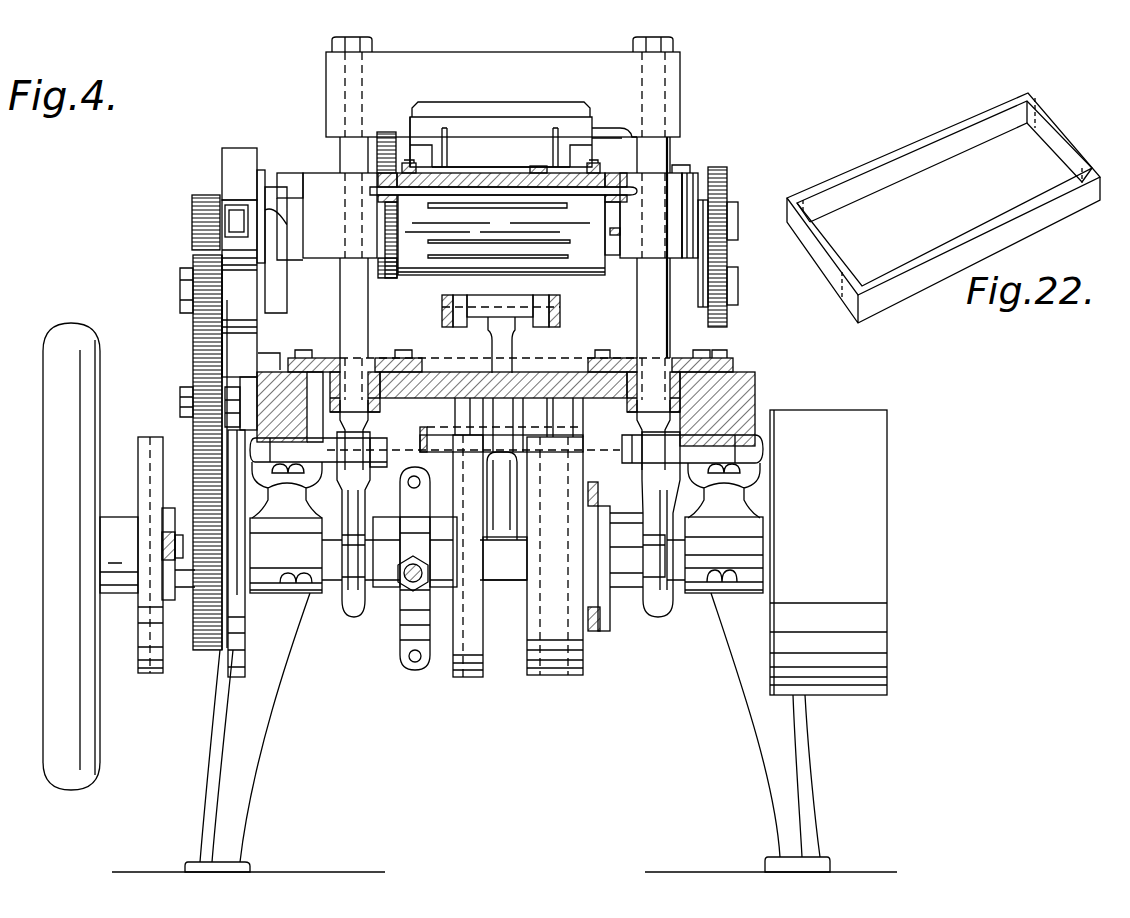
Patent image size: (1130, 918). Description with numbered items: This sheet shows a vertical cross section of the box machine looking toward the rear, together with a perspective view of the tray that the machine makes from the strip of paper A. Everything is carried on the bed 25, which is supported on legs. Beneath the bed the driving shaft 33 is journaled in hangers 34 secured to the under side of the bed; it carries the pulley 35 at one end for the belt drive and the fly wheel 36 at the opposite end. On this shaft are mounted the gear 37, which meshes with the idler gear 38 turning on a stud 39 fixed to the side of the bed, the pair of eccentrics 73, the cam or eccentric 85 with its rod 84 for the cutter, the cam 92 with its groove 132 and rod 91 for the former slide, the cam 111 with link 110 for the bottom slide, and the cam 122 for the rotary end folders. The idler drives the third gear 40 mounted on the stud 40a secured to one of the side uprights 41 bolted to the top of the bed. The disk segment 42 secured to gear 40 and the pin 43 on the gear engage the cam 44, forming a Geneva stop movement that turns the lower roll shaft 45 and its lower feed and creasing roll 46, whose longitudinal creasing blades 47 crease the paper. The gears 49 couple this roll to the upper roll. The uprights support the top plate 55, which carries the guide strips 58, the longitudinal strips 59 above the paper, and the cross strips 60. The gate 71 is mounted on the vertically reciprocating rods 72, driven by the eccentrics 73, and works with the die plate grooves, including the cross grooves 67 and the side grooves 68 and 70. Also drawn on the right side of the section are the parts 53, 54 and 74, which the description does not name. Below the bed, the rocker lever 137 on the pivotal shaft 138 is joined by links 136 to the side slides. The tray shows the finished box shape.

In FIG. 4, the gate 71 is at (395, 52).
In FIG. 4, the vertically reciprocating rods 72 is at (342, 152).
In FIG. 4, the cross grooves 67 is at (457, 155).
In FIG. 4, the cross strips 60 is at (485, 160).
In FIG. 4, the longitudinal strips 59 is at (533, 157).
In FIG. 4, the side grooves 68 is at (577, 150).
In FIG. 4, the guide strips 58 is at (613, 120).
In FIG. 4, the gears 49 is at (386, 134).
In FIG. 4, the die plate 74 is at (372, 198).
In FIG. 4, the lower roll shaft 45 is at (502, 245).
In FIG. 4, the side groove 70 is at (440, 198).
In FIG. 4, the longitudinal creasing blades 47 is at (505, 245).
In FIG. 4, the lower feed and creasing roll 46 is at (397, 278).
In FIG. 4, the cam 44 is at (228, 148).
In FIG. 4, the pin 43 is at (233, 220).
In FIG. 4, the third gear 40 is at (205, 235).
In FIG. 4, the stud 40a is at (268, 300).
In FIG. 4, the disk segment 42 is at (192, 268).
In FIG. 4, the side uprights 41 is at (225, 342).
In FIG. 4, the idler gear 38 is at (196, 358).
In FIG. 4, the stud 39 is at (233, 387).
In FIG. 4, the gear 54 is at (722, 172).
In FIG. 4, the gear hub 53 is at (722, 292).
In FIG. 4, the top plate 55 is at (663, 165).
In FIG. 4, the rocker lever 137 is at (495, 352).
In FIG. 4, the links 136 is at (548, 329).
In FIG. 4, the bed 25 is at (752, 375).
In FIG. 4, the pivotal shaft 138 is at (420, 437).
In FIG. 4, the eccentrics 73 is at (348, 608).
In FIG. 4, the hangers 34 is at (277, 596).
In FIG. 4, the driving shaft 33 is at (383, 600).
In FIG. 4, the cam or eccentric 85 is at (410, 652).
In FIG. 4, the rod 84 is at (413, 562).
In FIG. 4, the groove 132 is at (490, 600).
In FIG. 4, the cam 92 is at (590, 520).
In FIG. 4, the rod 91 is at (596, 635).
In FIG. 4, the pulley 35 is at (832, 572).
In FIG. 4, the fly wheel 36 is at (52, 476).
In FIG. 4, the link 110 is at (165, 560).
In FIG. 4, the cam 111 is at (143, 510).
In FIG. 4, the gear 37 is at (202, 656).
In FIG. 4, the cam 122 is at (237, 672).
In FIG. 22, the strip of paper A is at (1115, 165).